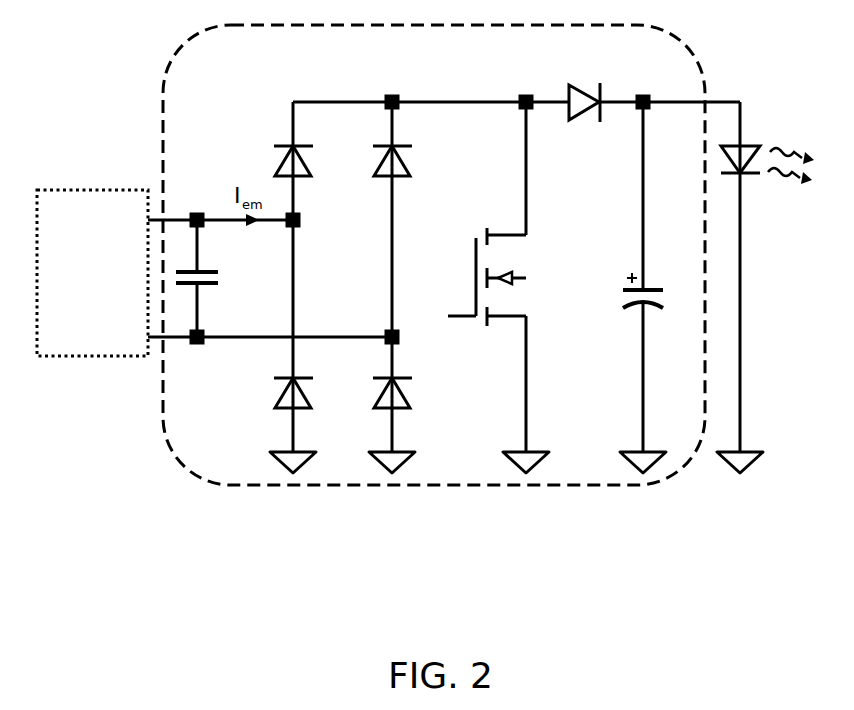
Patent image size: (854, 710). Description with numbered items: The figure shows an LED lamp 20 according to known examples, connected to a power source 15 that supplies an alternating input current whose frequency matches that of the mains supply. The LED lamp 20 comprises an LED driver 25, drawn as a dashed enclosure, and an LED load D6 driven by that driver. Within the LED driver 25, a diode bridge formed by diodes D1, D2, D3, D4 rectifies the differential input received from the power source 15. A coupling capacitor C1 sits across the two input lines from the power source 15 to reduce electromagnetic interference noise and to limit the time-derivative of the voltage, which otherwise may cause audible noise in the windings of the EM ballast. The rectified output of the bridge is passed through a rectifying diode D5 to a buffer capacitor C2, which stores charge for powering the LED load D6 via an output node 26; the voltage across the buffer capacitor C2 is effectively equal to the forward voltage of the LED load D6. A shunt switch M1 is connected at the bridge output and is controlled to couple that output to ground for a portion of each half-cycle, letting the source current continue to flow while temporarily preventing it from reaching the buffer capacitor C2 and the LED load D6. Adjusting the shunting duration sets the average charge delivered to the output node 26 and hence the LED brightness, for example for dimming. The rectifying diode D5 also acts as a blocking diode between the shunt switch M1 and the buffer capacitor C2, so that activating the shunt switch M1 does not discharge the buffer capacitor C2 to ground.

The power source 15 is at (92, 273).
The LED lamp 20 is at (246, 555).
The LED driver 25 is at (428, 485).
The output node 26 is at (643, 102).
The diode bridge diode D1 is at (281, 143).
The diode bridge diode D2 is at (377, 143).
The diode bridge diode D3 is at (279, 376).
The diode bridge diode D4 is at (377, 376).
The rectifying diode D5 is at (582, 89).
The LED load D6 is at (767, 147).
The coupling capacitor C1 is at (213, 278).
The buffer capacitor C2 is at (653, 277).
The shunt switch M1 is at (490, 277).